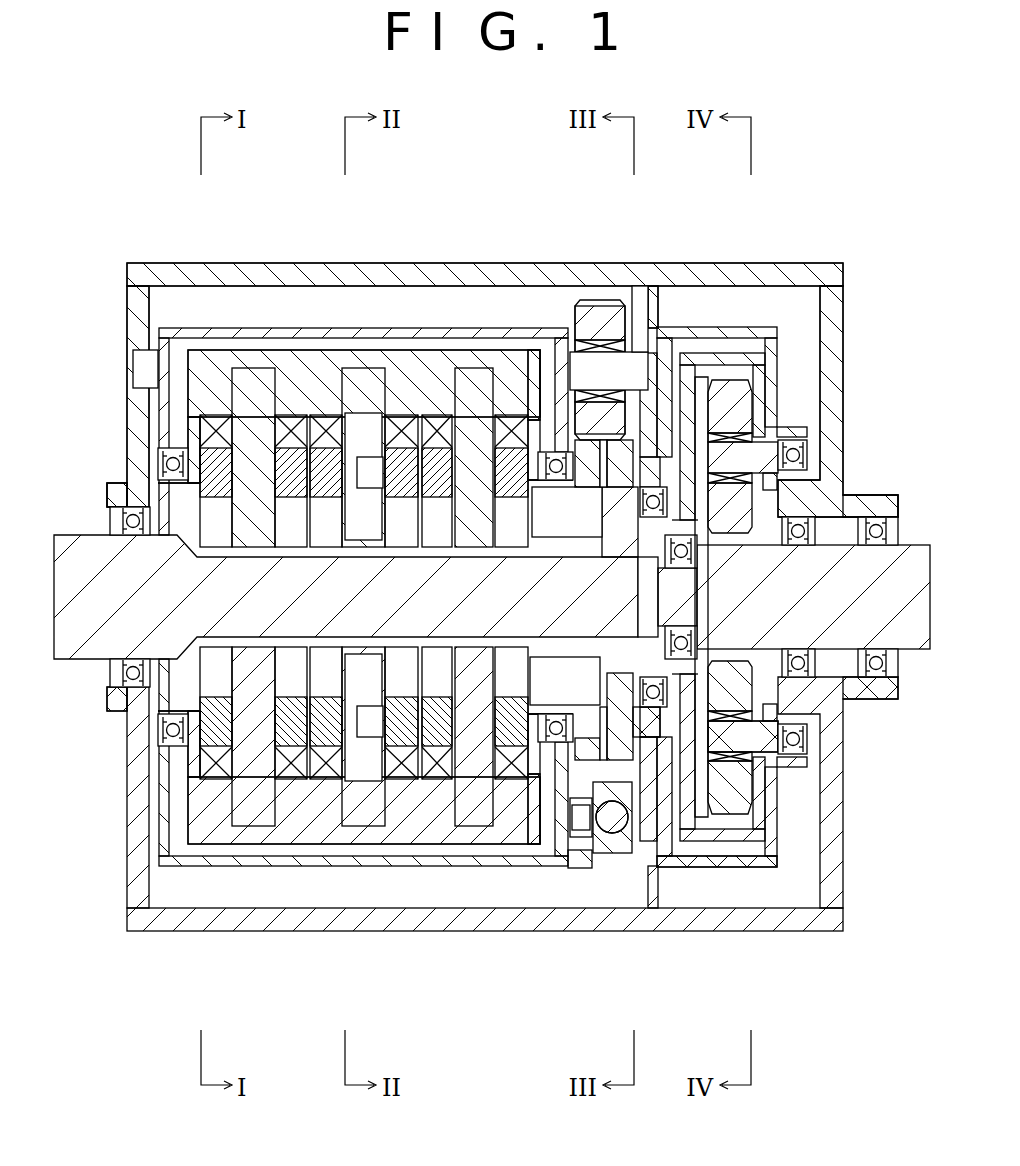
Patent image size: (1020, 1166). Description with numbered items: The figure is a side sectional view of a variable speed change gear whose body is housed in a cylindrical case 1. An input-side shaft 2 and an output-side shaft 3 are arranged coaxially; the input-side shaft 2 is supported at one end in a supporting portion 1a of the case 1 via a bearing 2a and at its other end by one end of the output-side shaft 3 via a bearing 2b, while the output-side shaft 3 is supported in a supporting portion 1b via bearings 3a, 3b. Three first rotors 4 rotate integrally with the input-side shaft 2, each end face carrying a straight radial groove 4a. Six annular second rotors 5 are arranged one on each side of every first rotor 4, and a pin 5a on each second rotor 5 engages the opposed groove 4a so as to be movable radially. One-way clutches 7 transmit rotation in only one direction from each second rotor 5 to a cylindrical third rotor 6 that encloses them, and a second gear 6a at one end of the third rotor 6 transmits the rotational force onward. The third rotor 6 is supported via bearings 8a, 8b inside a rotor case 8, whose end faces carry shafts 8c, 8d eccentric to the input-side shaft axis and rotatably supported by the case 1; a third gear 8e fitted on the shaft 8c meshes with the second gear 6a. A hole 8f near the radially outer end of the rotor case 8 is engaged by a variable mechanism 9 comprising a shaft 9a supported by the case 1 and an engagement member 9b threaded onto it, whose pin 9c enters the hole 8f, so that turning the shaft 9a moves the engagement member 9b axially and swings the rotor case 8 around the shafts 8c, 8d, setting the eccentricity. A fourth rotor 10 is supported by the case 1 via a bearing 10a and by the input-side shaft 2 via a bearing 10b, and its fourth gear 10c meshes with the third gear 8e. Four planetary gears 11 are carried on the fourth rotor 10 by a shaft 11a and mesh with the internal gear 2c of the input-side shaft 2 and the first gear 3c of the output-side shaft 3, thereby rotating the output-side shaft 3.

The case 1 is at (830, 268).
The supporting portion 1a is at (115, 672).
The supporting portion 1b is at (848, 702).
The input-side shaft 2 is at (85, 545).
The bearing 2a is at (128, 690).
The bearing 2b is at (790, 470).
The internal gear 2c is at (735, 830).
The output-side shaft 3 is at (918, 560).
The bearing 3a is at (830, 675).
The bearing 3b is at (878, 672).
The first gear 3c is at (783, 425).
The first rotor 4 is at (240, 845).
The groove 4a is at (365, 375).
The second rotor 5 is at (430, 430).
The pin 5a is at (355, 462).
The third rotor 6 is at (345, 840).
The second gear 6a is at (535, 840).
The one-way clutch 7 is at (228, 335).
The rotor case 8 is at (162, 300).
The bearing 8a is at (552, 455).
The bearing 8b is at (168, 460).
The shaft 8c is at (640, 362).
The shaft 8d is at (135, 362).
The third gear 8e is at (597, 310).
The hole 8f is at (590, 762).
The variable mechanism 9 is at (632, 880).
The shaft 9a is at (612, 855).
The engagement member 9b is at (582, 820).
The pin 9c is at (568, 830).
The fourth rotor 10 is at (790, 362).
The bearing 10a is at (782, 852).
The bearing 10b is at (770, 860).
The fourth gear 10c is at (665, 740).
The planetary gear 11 is at (735, 400).
The shaft 11a is at (735, 870).